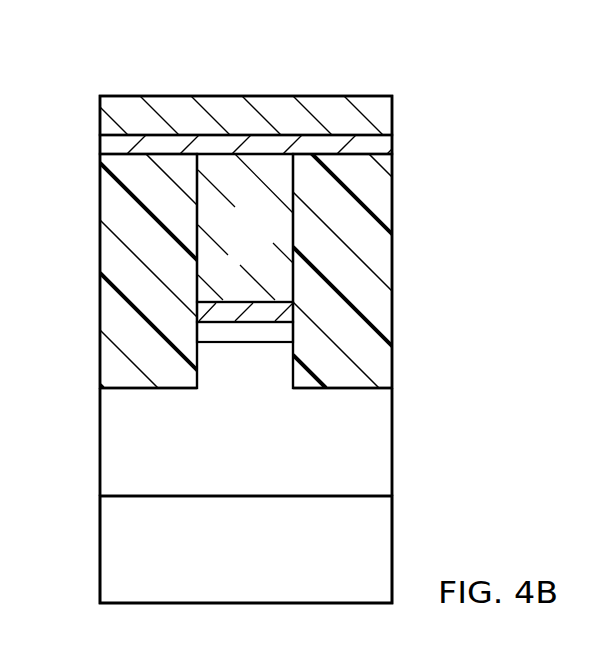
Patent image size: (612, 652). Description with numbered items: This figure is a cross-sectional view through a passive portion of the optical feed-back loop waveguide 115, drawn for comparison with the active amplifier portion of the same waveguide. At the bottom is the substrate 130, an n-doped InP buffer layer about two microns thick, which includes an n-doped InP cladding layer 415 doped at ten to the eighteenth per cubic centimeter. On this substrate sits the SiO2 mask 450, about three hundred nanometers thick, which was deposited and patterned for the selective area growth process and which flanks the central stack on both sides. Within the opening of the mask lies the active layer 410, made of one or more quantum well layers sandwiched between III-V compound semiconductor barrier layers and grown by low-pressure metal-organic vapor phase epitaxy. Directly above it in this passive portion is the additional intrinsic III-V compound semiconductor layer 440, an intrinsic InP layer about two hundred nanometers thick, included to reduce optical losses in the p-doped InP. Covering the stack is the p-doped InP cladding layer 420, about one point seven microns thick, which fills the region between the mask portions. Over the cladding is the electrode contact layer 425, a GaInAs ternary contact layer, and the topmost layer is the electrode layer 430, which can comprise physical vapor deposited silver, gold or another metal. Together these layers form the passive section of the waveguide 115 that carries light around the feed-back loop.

The optical feed-back loop waveguide 115 is at (123, 86).
The substrate 130 is at (108, 555).
The active layer 410 is at (257, 332).
The n-doped InP cladding layer 415 is at (383, 440).
The p-doped InP cladding layer 420 is at (266, 240).
The electrode contact layer 425 is at (108, 143).
The electrode layer 430 is at (383, 115).
The intrinsic III-V compound semiconductor layer 440 is at (222, 312).
The SiO2 mask 450 is at (108, 303).